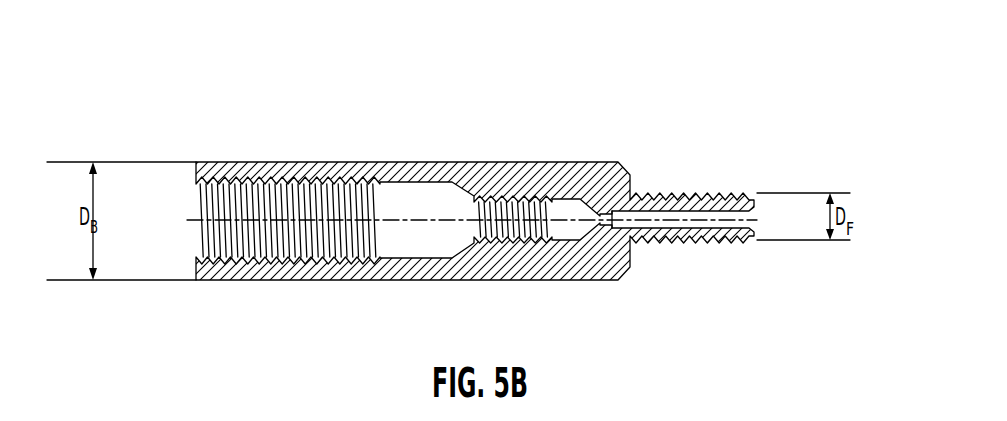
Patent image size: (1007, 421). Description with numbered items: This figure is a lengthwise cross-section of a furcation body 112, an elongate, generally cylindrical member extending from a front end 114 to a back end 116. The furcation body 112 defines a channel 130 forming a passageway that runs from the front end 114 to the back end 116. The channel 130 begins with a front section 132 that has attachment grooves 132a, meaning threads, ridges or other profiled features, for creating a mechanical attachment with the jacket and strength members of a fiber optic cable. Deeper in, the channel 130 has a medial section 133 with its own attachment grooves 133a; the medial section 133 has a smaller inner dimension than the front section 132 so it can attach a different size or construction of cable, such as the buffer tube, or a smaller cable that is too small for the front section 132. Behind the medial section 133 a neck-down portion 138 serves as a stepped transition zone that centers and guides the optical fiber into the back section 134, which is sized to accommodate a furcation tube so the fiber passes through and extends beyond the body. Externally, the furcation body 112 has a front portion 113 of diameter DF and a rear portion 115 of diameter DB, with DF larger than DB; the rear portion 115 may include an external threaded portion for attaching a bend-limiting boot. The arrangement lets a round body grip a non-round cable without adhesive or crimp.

The furcation body 112 is at (492, 112).
The front portion 113 is at (753, 180).
The front end 114 is at (196, 168).
The rear portion 115 is at (632, 155).
The back end 116 is at (758, 192).
The channel 130 is at (425, 210).
The front section 132 is at (450, 287).
The attachment grooves 132a is at (200, 228).
The medial section 133 is at (575, 284).
The attachment grooves 133a is at (528, 203).
The back section 134 is at (762, 277).
The neck-down portion 138 is at (622, 285).